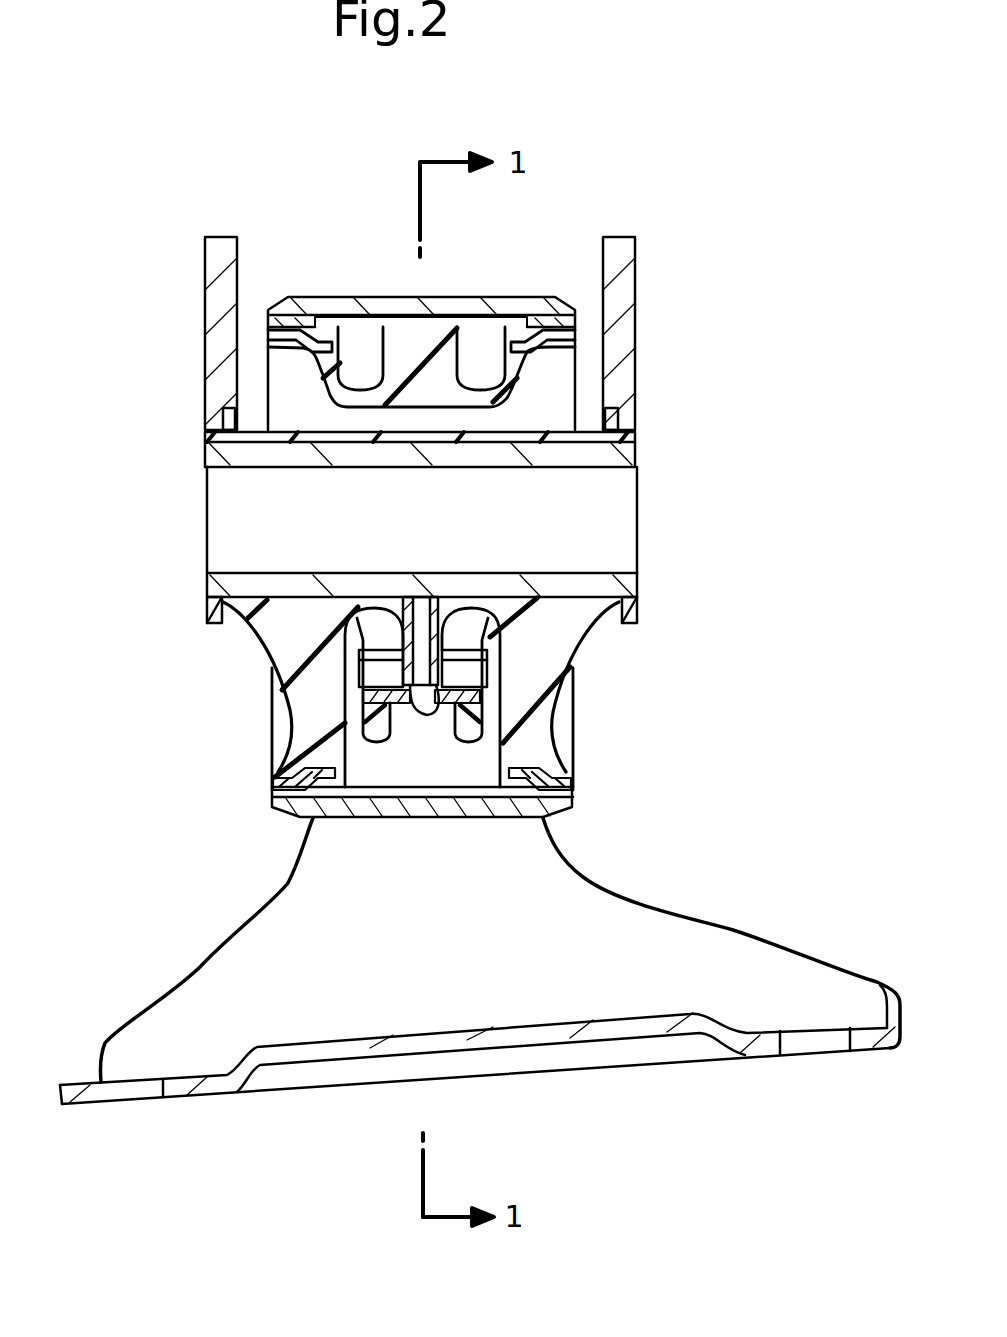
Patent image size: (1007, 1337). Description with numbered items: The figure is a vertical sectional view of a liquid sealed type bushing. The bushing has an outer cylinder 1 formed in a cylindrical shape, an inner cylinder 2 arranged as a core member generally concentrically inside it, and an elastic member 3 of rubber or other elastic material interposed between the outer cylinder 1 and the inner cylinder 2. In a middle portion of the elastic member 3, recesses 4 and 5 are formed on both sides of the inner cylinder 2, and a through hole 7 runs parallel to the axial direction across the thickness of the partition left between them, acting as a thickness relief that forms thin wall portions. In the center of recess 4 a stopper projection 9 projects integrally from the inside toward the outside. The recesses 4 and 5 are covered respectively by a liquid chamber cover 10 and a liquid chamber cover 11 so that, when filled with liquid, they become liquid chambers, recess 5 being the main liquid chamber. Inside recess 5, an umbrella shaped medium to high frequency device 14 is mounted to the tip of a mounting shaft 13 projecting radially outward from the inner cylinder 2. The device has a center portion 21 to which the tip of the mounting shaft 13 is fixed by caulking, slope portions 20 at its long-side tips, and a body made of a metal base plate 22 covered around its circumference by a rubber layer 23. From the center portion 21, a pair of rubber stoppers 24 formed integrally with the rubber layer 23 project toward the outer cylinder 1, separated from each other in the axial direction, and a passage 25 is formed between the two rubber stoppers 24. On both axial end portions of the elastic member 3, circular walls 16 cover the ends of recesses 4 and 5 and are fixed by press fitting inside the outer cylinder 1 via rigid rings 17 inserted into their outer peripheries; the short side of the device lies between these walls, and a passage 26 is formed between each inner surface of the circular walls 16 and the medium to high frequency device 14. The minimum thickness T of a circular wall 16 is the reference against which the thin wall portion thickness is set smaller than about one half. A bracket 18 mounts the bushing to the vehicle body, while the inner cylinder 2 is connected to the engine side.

The outer cylinder 1 is at (520, 300).
The inner cylinder 2 is at (637, 450).
The elastic member 3 is at (257, 678).
The recess 4 is at (370, 372).
The recess 5 is at (430, 758).
The through hole 7 is at (532, 405).
The stopper projection 9 is at (407, 335).
The liquid chamber cover 10 is at (358, 320).
The liquid chamber cover 11 is at (543, 820).
The mounting shaft 13 is at (438, 650).
The medium to high frequency device 14 is at (435, 722).
The circular wall 16 is at (272, 637).
The rigid ring 17 is at (297, 770).
The bracket 18 is at (640, 925).
The slope portion 20 is at (390, 665).
The center portion 21 is at (462, 672).
The base plate 22 is at (272, 733).
The rubber layer 23 is at (292, 710).
The rubber stopper 24 is at (383, 745).
The passage 25 is at (412, 724).
The passage 26 is at (343, 626).
The minimum thickness of circular wall T is at (503, 735).